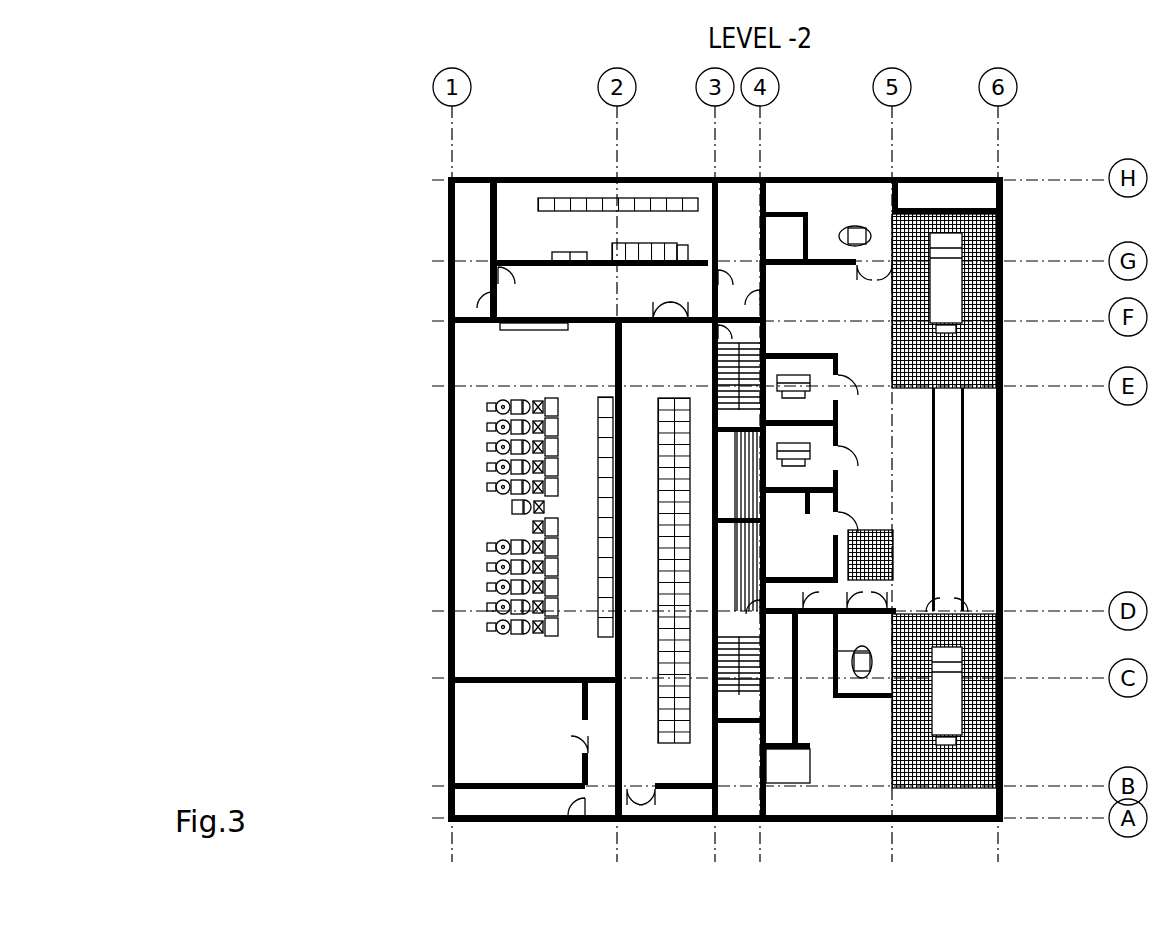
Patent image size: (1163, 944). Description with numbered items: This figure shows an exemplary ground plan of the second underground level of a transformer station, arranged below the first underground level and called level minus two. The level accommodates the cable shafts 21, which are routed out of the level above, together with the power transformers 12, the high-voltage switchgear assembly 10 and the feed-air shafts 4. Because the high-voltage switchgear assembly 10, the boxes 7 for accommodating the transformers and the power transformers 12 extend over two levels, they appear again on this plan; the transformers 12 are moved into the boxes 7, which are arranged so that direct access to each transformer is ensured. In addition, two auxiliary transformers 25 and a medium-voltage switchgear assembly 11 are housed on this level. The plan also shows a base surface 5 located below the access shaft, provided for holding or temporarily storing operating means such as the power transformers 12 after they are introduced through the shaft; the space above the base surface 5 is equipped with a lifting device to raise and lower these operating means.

The feed-air shaft 4 is at (775, 246).
The base surface 5 is at (980, 538).
The box 7 is at (965, 300).
The high-voltage switchgear assembly 10 is at (492, 485).
The medium-voltage switchgear assembly 11 is at (667, 413).
The power transformer 12 is at (1003, 217).
The cable shaft 21 is at (475, 223).
The auxiliary transformer 25 is at (810, 457).